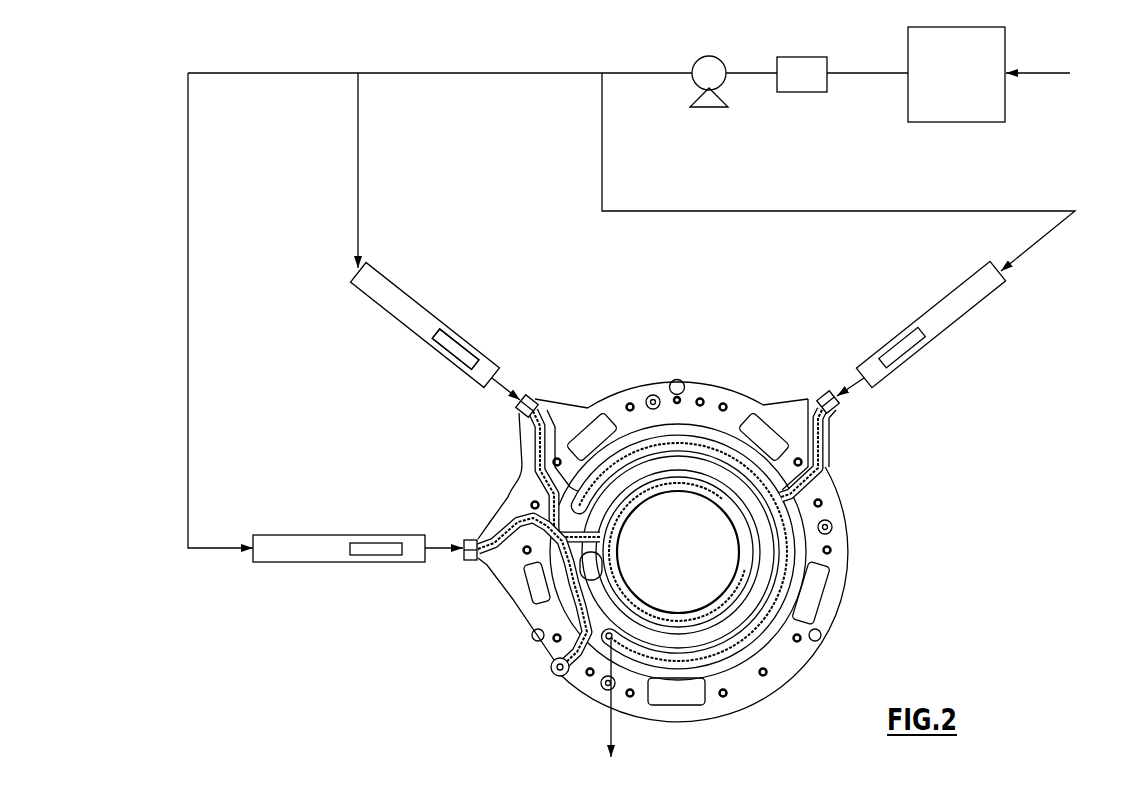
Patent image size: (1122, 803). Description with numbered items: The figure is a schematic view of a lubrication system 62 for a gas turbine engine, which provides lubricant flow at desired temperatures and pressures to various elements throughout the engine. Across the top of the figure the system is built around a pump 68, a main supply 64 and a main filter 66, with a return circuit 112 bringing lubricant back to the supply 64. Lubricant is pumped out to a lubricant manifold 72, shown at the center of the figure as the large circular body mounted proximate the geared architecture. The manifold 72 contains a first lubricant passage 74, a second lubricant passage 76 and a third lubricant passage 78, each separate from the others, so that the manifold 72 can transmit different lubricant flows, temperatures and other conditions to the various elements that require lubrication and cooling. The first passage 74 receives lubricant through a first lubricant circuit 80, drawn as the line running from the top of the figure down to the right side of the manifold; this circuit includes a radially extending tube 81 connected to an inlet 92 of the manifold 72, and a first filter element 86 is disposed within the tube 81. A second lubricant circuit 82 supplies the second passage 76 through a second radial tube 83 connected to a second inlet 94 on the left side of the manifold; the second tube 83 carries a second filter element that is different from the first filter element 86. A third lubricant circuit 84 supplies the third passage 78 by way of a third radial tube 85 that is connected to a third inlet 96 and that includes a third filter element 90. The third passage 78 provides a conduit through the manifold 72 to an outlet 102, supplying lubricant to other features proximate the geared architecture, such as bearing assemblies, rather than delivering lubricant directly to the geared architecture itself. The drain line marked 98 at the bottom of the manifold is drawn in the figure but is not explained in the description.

The lubrication system 62 is at (268, 662).
The main supply 64 is at (968, 86).
The main filter 66 is at (800, 92).
The pump 68 is at (708, 57).
The lubricant manifold 72 is at (843, 553).
The first lubricant passage 74 is at (812, 489).
The second lubricant passage 76 is at (522, 444).
The third lubricant passage 78 is at (580, 597).
The first lubricant circuit 80 is at (870, 211).
The radially extending tube 81 is at (985, 287).
The second lubricant circuit 82 is at (358, 160).
The second radial tube 83 is at (418, 329).
The third lubricant circuit 84 is at (188, 425).
The third radial tube 85 is at (288, 553).
The first filter element 86 is at (903, 345).
The third filter element 90 is at (363, 553).
The inlet 92 is at (843, 409).
The second inlet 94 is at (513, 408).
The third inlet 96 is at (462, 559).
The drain outlet 98 is at (616, 722).
The outlet 102 is at (560, 680).
The return circuit 112 is at (1056, 74).